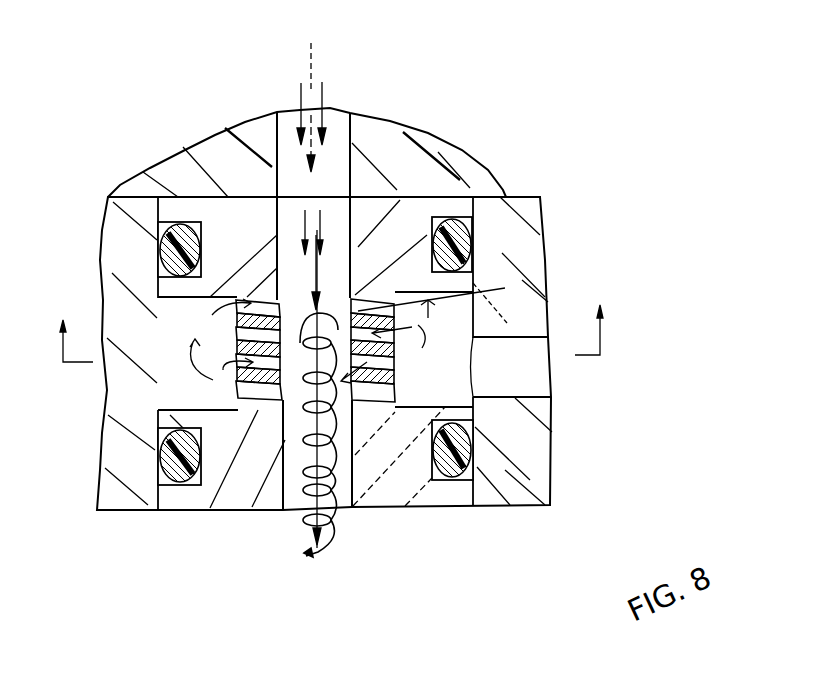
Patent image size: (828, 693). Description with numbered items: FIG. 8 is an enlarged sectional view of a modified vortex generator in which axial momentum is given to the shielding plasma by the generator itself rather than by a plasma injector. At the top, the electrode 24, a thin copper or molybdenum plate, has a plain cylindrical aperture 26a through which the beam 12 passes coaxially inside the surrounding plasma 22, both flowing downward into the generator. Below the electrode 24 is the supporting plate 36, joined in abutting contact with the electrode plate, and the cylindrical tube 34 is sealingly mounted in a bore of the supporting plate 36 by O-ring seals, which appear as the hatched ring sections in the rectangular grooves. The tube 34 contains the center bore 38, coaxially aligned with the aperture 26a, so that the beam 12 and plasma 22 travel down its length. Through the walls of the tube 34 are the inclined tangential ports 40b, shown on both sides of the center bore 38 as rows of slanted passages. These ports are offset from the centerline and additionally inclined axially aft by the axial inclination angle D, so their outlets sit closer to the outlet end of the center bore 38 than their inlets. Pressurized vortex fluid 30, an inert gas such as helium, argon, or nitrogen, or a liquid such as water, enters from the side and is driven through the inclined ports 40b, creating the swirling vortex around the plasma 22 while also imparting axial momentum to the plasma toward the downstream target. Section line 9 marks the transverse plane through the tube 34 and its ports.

The beam 12 is at (311, 57).
The plasma 22 is at (320, 92).
The plain cylindrical aperture 26a is at (345, 115).
The electrode 24 is at (433, 174).
The center bore 38 is at (290, 257).
The supporting plate 36 is at (528, 239).
The tube 34 is at (258, 461).
The vortex fluid 30 is at (440, 367).
The inclined tangential ports 40b is at (320, 382).
The axial inclination angle D is at (424, 298).
The section line 9- 9 is at (327, 331).